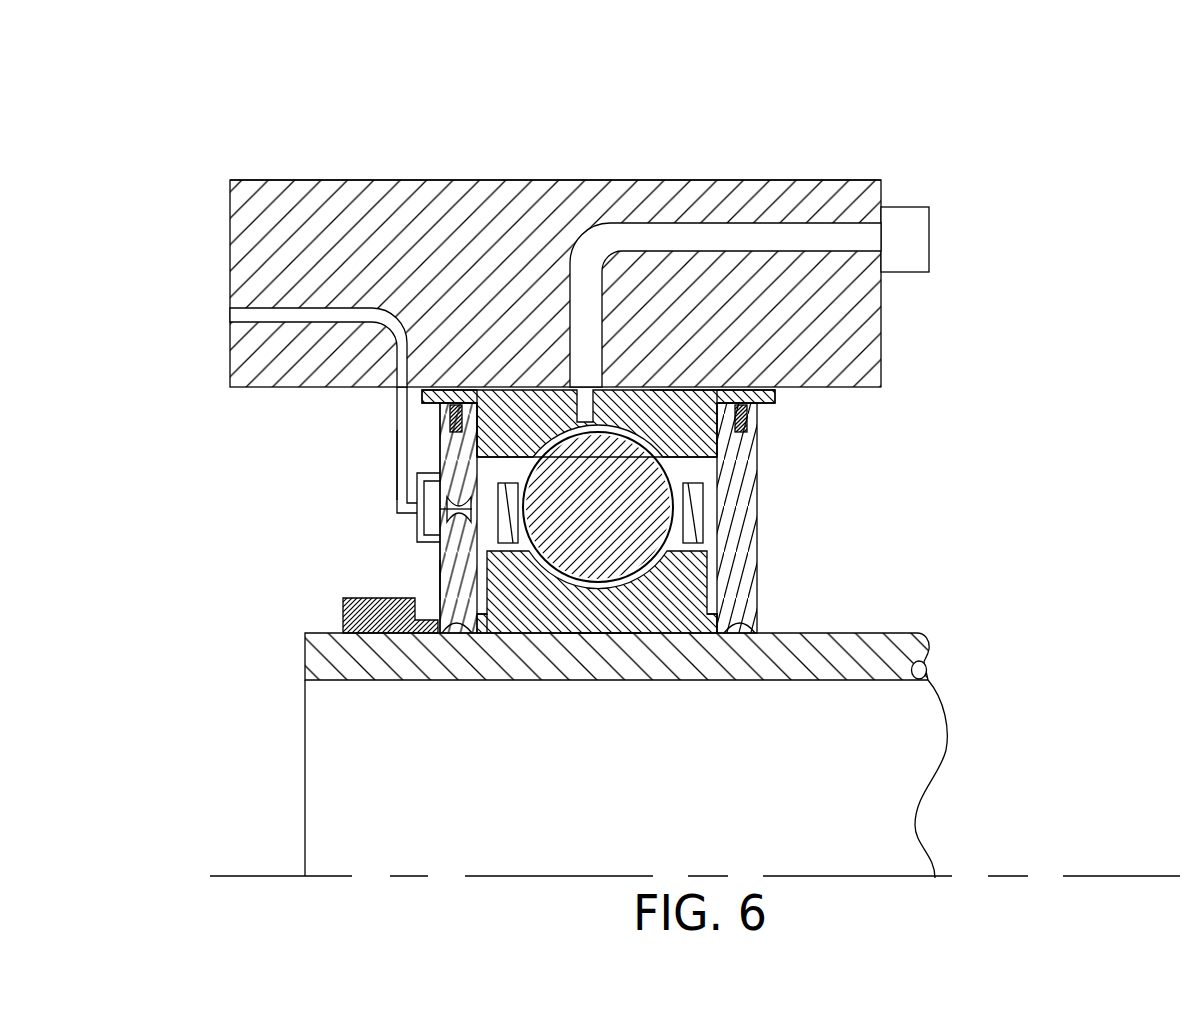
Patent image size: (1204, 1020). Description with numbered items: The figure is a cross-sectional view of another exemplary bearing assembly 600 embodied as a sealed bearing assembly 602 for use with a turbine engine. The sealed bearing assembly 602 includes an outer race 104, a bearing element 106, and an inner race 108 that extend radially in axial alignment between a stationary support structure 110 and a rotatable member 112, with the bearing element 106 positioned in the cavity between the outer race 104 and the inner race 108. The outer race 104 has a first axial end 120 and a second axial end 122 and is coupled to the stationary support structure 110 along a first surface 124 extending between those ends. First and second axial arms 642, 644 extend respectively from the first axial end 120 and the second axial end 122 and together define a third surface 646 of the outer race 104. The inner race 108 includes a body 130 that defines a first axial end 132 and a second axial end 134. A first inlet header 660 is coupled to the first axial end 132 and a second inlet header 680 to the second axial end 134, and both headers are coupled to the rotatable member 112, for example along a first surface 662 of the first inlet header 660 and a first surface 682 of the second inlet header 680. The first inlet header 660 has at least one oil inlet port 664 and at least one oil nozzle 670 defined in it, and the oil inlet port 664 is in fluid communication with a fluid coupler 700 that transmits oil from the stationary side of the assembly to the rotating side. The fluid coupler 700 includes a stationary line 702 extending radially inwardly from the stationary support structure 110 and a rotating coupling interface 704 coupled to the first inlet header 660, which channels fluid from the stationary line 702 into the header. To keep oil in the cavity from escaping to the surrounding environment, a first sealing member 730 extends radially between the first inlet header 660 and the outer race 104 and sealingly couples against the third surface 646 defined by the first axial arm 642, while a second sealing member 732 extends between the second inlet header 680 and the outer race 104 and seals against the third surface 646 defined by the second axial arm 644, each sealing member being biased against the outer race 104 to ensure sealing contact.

The bearing assembly 600 is at (1057, 128).
The sealed bearing assembly 602 is at (880, 484).
The outer race 104 is at (760, 461).
The bearing element 106 is at (687, 508).
The inner race 108 is at (683, 578).
The stationary support structure 110 is at (322, 188).
The rotatable member 112 is at (313, 662).
The first axial end 120 is at (478, 413).
The second axial end 122 is at (684, 398).
The first surface 124 is at (548, 393).
The body 130 is at (595, 612).
The first axial end 132 is at (490, 597).
The second axial end 134 is at (715, 590).
The first axial arm 642 is at (441, 423).
The second axial arm 644 is at (744, 405).
The third surface 646 is at (703, 438).
The first inlet header 660 is at (447, 572).
The first surface 662 is at (438, 628).
The oil inlet port 664 is at (447, 488).
The oil nozzle 670 is at (462, 522).
The second inlet header 680 is at (740, 547).
The first surface 682 is at (745, 626).
The fluid coupler 700 is at (362, 471).
The stationary line 702 is at (396, 400).
The rotating coupling interface 704 is at (417, 507).
The first sealing member 730 is at (445, 413).
The second sealing member 732 is at (760, 400).